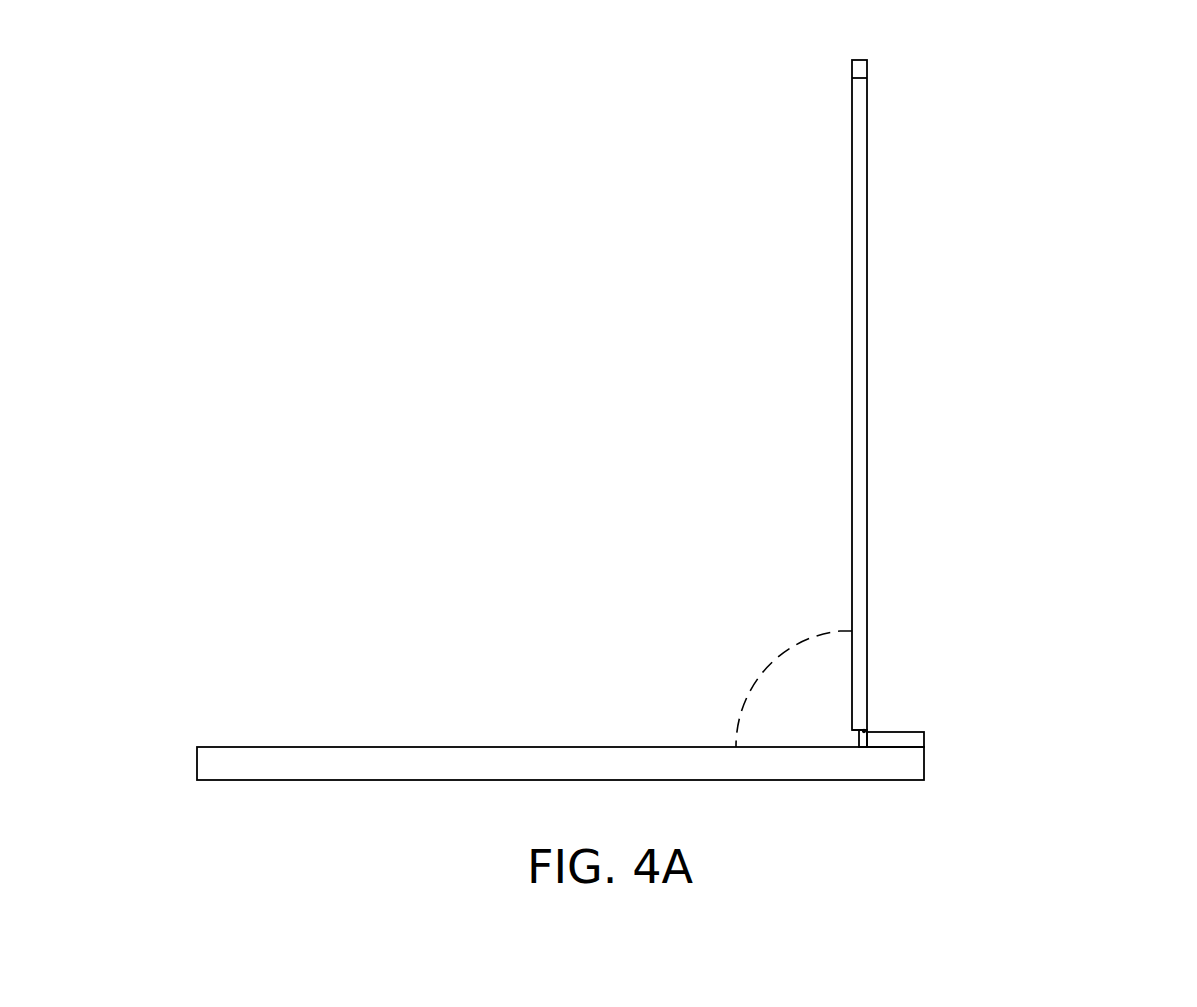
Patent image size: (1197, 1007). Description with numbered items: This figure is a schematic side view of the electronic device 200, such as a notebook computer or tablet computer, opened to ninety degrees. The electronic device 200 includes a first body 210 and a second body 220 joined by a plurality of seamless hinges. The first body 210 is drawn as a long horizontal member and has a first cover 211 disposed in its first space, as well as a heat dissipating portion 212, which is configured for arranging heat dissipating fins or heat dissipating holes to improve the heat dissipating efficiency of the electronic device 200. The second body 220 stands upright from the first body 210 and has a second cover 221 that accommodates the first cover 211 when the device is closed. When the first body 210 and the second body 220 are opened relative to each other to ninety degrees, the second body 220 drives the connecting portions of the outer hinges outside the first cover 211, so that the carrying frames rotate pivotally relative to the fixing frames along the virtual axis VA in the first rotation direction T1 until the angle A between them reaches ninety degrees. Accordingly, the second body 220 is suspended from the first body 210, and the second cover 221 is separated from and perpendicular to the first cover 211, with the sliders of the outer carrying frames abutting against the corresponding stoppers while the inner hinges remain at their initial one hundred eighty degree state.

The electronic device 200 is at (1172, 644).
The first body 210 is at (373, 757).
The first cover 211 is at (863, 749).
The heat dissipating portion 212 is at (917, 739).
The second body 220 is at (860, 397).
The second cover 221 is at (853, 711).
The angle A is at (791, 689).
The virtual axis VA is at (864, 731).
The first rotation direction T1 is at (805, 62).